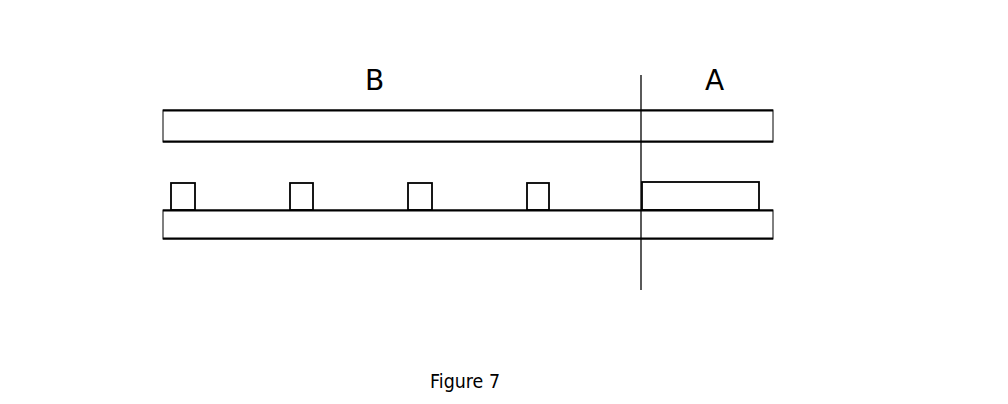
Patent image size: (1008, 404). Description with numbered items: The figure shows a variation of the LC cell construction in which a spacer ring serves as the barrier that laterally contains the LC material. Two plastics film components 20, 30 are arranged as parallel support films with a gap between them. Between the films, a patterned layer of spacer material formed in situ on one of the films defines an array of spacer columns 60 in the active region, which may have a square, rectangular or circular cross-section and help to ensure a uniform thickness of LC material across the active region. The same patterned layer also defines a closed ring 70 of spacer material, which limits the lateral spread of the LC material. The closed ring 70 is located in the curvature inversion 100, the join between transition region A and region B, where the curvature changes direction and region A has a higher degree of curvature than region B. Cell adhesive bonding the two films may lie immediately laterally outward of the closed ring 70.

The plastics film component 20 is at (742, 118).
The plastics film component 30 is at (747, 220).
The spacer columns 60 is at (185, 193).
The closed ring of spacer material 70 is at (718, 193).
The curvature inversion 100 is at (638, 169).